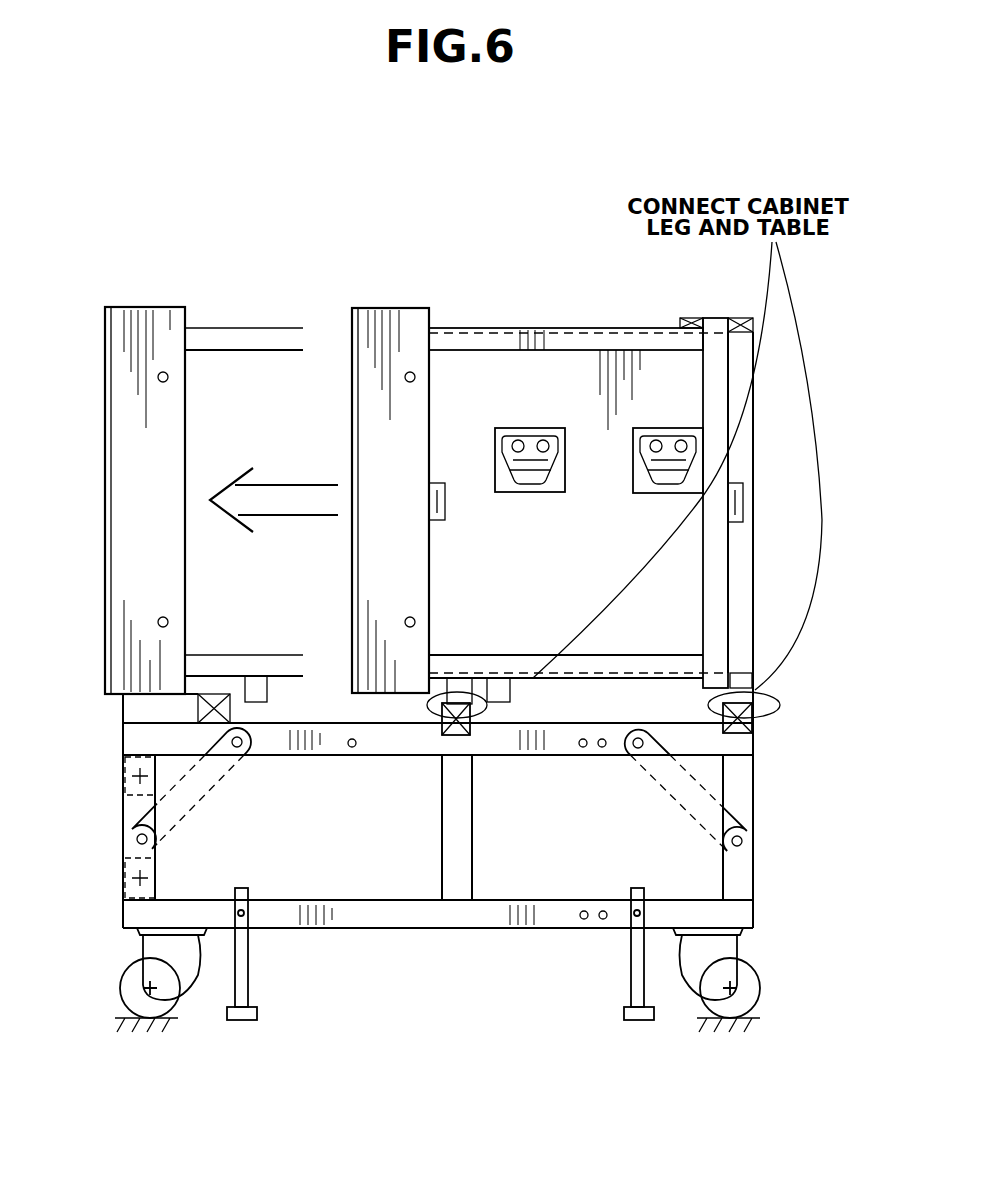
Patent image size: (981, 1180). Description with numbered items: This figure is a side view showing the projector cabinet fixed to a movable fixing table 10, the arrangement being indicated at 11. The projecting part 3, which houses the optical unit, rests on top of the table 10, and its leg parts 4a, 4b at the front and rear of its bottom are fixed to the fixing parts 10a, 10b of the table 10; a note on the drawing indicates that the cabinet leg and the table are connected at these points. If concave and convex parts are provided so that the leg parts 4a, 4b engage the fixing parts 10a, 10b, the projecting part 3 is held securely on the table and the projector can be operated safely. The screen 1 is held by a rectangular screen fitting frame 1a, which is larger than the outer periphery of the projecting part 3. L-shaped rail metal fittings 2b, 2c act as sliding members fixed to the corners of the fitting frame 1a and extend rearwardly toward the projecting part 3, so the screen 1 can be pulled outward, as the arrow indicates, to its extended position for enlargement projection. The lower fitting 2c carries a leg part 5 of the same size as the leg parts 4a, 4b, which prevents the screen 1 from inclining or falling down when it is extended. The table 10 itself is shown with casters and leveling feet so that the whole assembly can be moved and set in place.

The cabinet (separated leg portion) 11 is at (96, 292).
The screen 1 is at (110, 498).
The screen fitting frame 1a is at (150, 318).
The L-shaped rail metal fitting 2b is at (268, 341).
The L-shaped rail metal fitting 2c is at (302, 668).
The projecting part 3 is at (585, 372).
The leg part 4a is at (455, 678).
The leg part 4b is at (746, 676).
The leg part 5 is at (255, 676).
The fixing table 10 is at (788, 836).
The fixing part 10a is at (488, 706).
The fixing part 10b is at (780, 706).